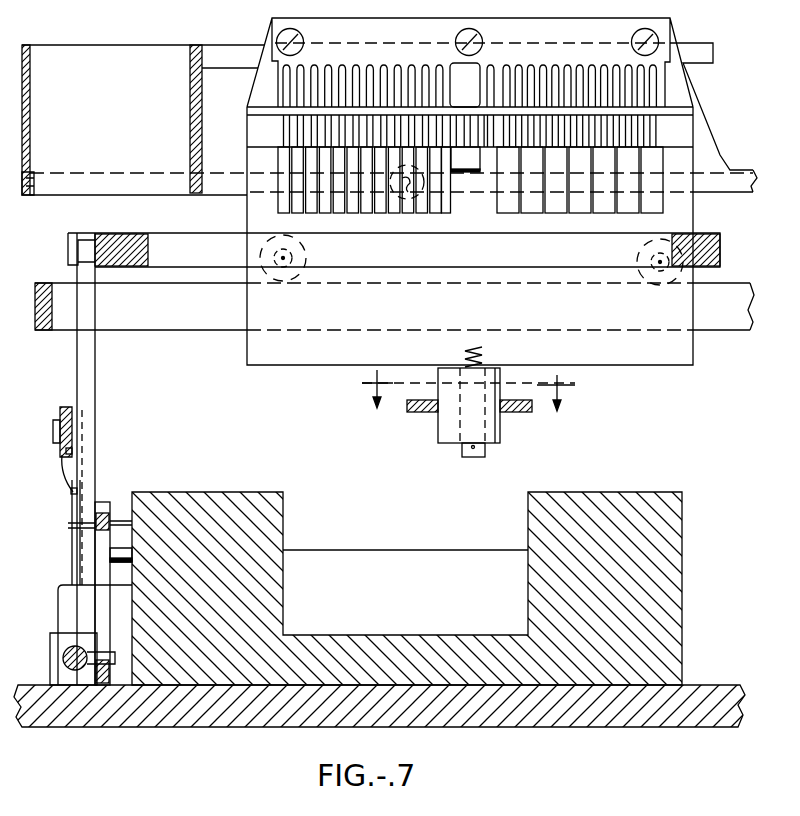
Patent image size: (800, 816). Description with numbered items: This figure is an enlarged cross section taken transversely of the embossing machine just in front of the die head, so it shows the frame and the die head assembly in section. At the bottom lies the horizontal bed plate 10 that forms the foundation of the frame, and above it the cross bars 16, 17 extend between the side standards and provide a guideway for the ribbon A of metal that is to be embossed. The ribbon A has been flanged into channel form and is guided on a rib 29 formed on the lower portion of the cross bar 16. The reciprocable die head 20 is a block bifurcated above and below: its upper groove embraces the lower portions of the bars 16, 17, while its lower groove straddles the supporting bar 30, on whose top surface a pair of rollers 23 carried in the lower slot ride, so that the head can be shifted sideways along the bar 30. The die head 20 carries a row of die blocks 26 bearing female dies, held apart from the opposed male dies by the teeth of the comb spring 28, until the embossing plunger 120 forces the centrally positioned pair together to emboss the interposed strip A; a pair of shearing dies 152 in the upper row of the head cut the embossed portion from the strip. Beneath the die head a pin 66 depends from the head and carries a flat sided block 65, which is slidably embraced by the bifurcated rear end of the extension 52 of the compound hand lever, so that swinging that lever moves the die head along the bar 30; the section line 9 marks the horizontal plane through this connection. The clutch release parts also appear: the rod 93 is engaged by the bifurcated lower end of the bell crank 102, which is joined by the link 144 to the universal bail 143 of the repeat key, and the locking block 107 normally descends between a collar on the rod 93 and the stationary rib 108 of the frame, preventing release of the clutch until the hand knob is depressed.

The bed plate 10 is at (170, 700).
The cross bar 16 is at (143, 120).
The cross bar 17 is at (204, 102).
The die head 20 is at (500, 236).
The rollers 23 is at (306, 257).
The die blocks 26 is at (286, 205).
The comb spring 28 is at (647, 86).
The rib 29 is at (30, 172).
The supporting bar 30 is at (141, 306).
The extension 52 is at (418, 413).
The flat sided block 65 is at (450, 432).
The pin 66 is at (480, 458).
The rod 93 is at (62, 672).
The bell crank 102 is at (107, 607).
The locking block 107 is at (75, 568).
The stationary rib 108 is at (68, 600).
The embossing plunger 120 is at (405, 200).
The universal bail 143 is at (227, 246).
The link 144 is at (88, 375).
The shearing dies 152 is at (480, 153).
The section line 9 is at (468, 402).
The ribbon A is at (129, 180).